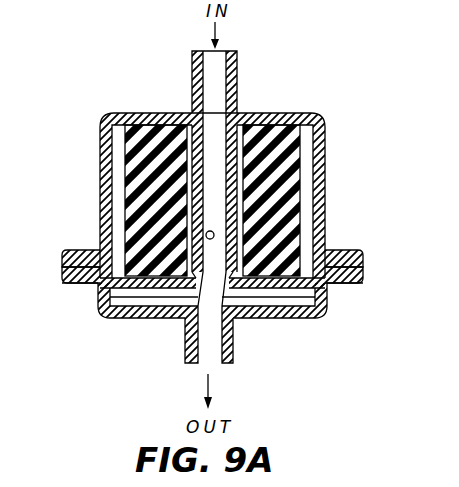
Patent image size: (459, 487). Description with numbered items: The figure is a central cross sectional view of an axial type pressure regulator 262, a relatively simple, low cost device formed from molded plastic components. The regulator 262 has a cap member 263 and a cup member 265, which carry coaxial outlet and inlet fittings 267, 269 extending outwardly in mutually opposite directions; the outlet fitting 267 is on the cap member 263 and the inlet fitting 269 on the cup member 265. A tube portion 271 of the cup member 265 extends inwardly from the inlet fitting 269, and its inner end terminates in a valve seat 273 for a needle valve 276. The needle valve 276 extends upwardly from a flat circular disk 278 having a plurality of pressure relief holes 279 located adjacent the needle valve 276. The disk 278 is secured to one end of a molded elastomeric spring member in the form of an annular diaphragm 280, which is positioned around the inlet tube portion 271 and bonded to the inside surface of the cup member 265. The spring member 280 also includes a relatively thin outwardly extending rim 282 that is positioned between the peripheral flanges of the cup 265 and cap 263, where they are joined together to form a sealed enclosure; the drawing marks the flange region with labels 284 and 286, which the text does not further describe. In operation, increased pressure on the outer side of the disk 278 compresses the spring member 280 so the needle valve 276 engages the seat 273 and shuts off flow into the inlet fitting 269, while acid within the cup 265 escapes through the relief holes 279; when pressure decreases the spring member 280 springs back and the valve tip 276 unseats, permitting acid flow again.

The regulator 262 is at (295, 104).
The cap member 263 is at (122, 314).
The cup member 265 is at (326, 153).
The outlet fitting 267 is at (235, 332).
The inlet fitting 269 is at (236, 79).
The tube portion 271 is at (229, 191).
The valve seat 273 is at (181, 278).
The needle valve 276 is at (205, 235).
The flat circular disk 278 is at (131, 300).
The pressure relief holes 279 is at (234, 292).
The annular diaphragm 280 is at (286, 210).
The rim 282 is at (336, 281).
The upper flange lip 284 is at (331, 262).
The seam 286 is at (323, 287).